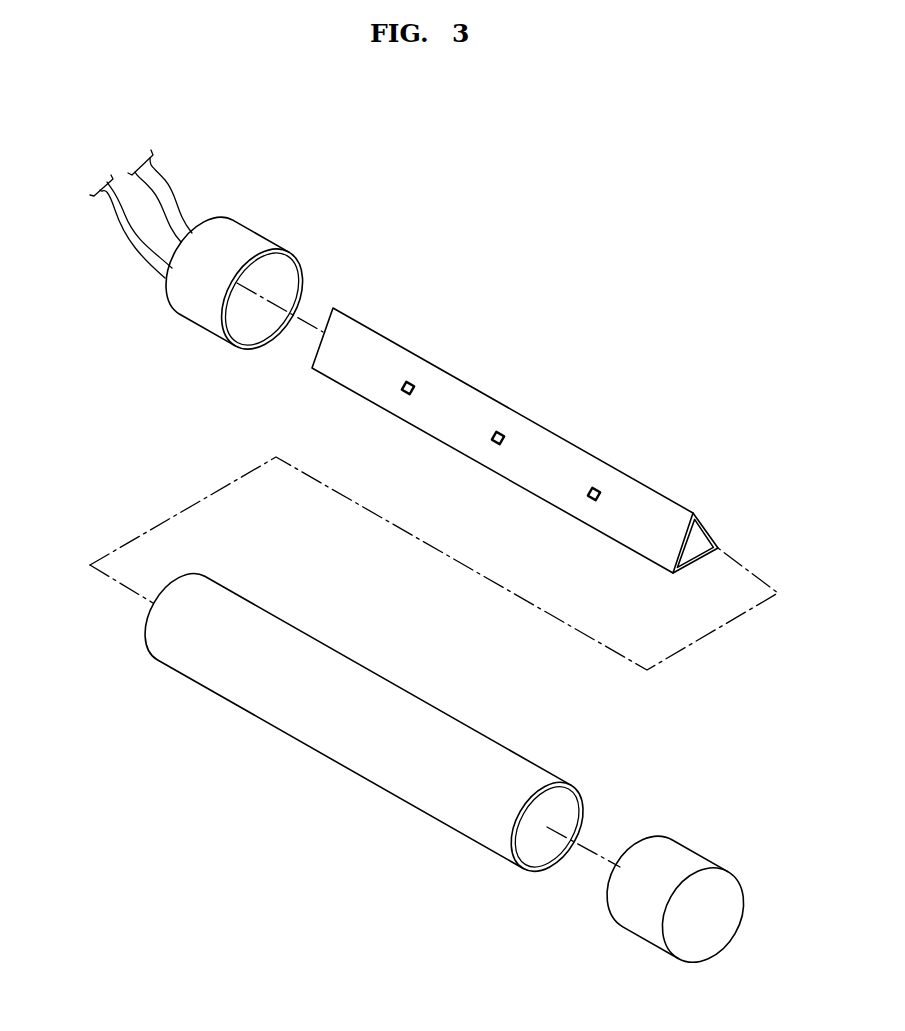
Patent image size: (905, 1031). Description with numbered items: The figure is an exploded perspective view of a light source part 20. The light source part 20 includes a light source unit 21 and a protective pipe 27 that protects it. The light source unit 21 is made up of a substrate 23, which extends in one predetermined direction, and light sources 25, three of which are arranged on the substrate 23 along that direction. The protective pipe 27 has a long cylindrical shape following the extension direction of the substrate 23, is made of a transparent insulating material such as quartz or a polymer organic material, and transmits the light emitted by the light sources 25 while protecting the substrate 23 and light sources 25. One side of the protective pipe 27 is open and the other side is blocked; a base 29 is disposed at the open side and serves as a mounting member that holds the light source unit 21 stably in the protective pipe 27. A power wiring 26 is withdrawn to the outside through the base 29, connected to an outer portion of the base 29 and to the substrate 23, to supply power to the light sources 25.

The light source part 20 is at (490, 261).
The light source unit 21 is at (515, 440).
The substrate 23 is at (546, 448).
The light source 25 is at (607, 375).
The power wiring 26 is at (168, 193).
The protective pipe 27 is at (455, 730).
The base 29 is at (244, 238).